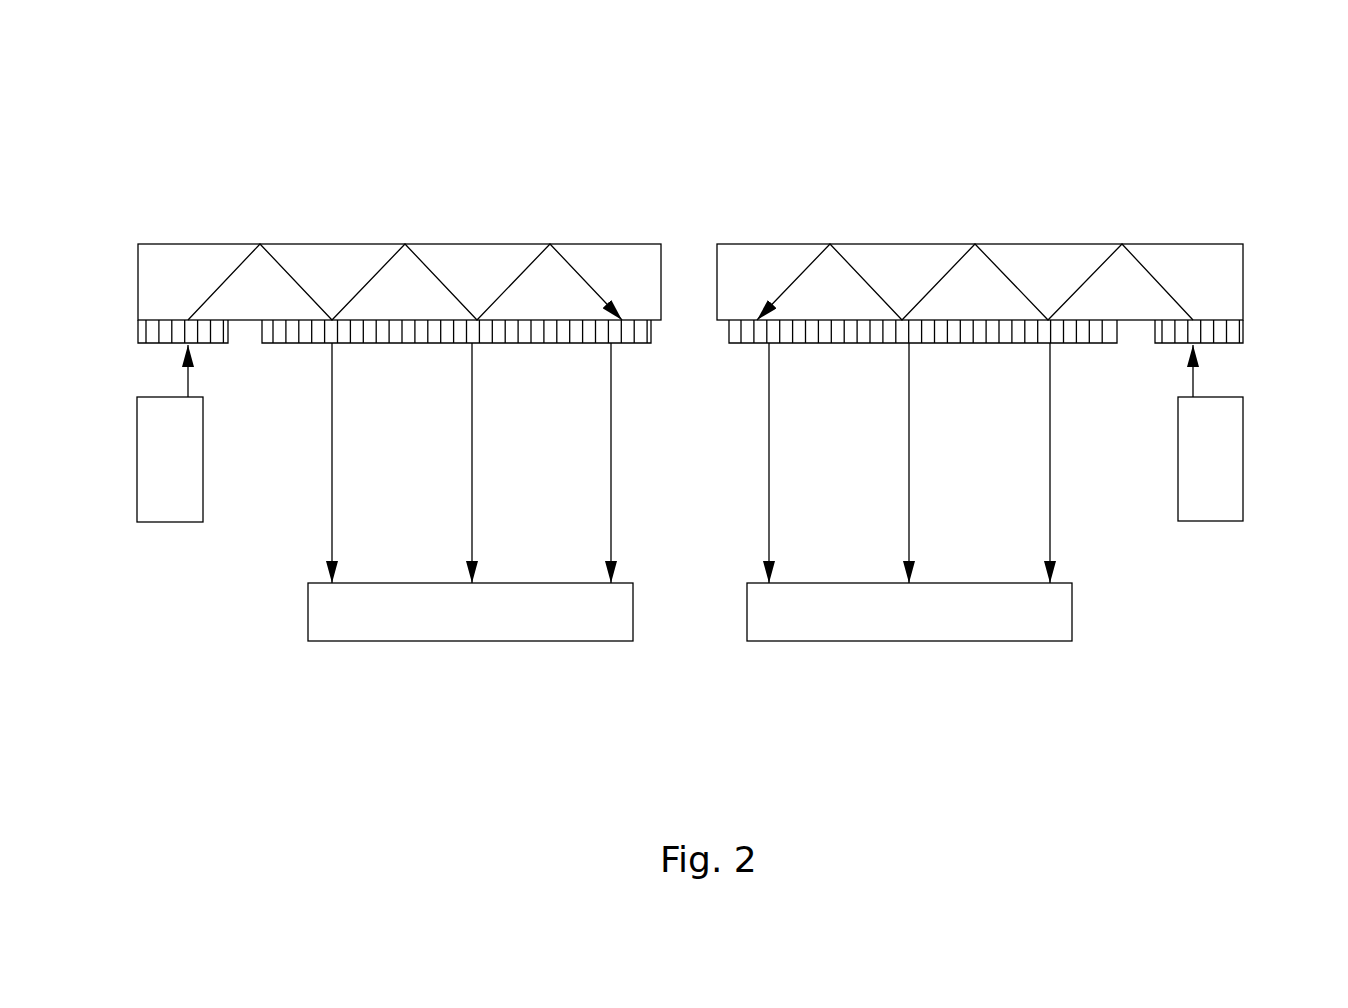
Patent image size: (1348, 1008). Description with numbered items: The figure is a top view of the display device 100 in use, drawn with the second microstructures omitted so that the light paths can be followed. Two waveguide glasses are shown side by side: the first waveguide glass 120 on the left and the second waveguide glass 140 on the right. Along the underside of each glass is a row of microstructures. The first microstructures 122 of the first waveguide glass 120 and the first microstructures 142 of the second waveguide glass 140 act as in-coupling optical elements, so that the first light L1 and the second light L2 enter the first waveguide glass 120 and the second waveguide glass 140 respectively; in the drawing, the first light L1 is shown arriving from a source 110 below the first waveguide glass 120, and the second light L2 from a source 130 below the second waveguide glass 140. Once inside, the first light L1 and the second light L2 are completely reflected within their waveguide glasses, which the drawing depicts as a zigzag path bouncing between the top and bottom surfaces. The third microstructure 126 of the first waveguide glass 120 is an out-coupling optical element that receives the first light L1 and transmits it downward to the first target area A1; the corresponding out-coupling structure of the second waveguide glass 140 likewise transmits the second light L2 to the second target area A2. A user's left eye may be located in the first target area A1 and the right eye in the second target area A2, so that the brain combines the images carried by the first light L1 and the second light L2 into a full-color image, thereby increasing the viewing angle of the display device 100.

The display device 100 is at (62, 67).
The first light source 110 is at (170, 522).
The first waveguide glass 120 is at (347, 244).
The first microstructures 122 is at (137, 333).
The third microstructure 126 is at (633, 344).
The second light source 130 is at (1208, 521).
The second waveguide glass 140 is at (1035, 244).
The first microstructures 142 is at (1245, 332).
The first light L1 is at (592, 280).
The second light L2 is at (793, 280).
The first target area A1 is at (470, 641).
The second target area A2 is at (910, 641).